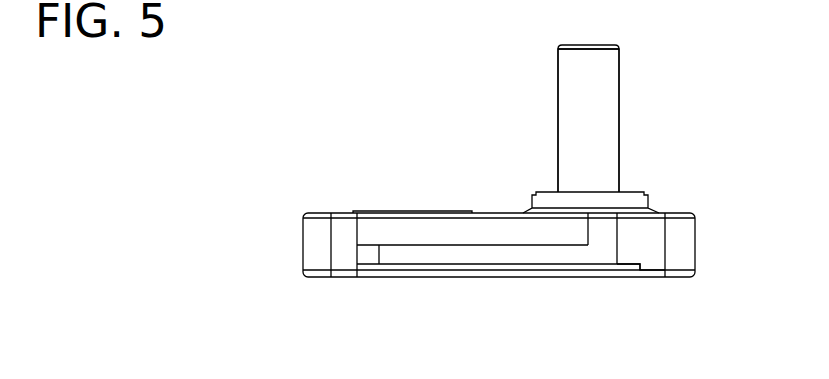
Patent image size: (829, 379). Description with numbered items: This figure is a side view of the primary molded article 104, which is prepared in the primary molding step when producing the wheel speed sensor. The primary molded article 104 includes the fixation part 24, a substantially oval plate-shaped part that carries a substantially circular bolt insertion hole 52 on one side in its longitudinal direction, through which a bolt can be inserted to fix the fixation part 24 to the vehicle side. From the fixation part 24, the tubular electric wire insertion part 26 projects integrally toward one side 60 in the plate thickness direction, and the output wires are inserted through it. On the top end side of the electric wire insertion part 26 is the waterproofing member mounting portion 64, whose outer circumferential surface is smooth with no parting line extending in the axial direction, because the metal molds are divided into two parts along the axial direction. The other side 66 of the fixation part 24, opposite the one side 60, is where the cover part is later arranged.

The primary molded article 104 is at (470, 90).
The fixation part 24 is at (412, 258).
The bolt insertion hole 52 is at (349, 212).
The one side 60 is at (650, 150).
The electric wire insertion part 26 is at (603, 95).
The waterproofing member mounting portion 64 is at (588, 120).
The other side 66 is at (650, 305).